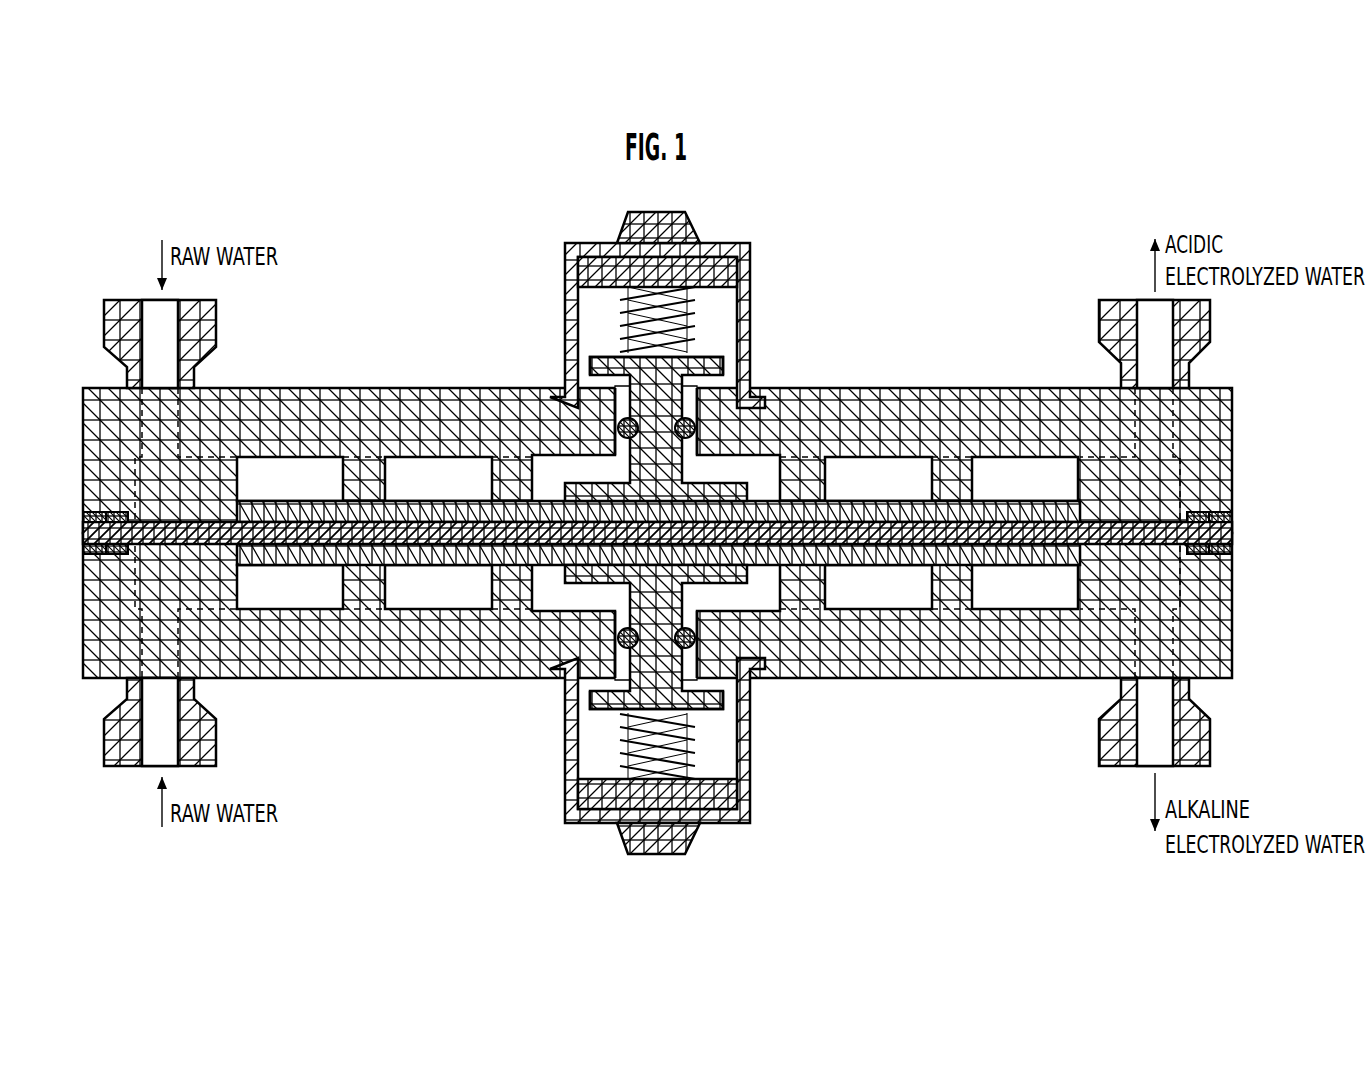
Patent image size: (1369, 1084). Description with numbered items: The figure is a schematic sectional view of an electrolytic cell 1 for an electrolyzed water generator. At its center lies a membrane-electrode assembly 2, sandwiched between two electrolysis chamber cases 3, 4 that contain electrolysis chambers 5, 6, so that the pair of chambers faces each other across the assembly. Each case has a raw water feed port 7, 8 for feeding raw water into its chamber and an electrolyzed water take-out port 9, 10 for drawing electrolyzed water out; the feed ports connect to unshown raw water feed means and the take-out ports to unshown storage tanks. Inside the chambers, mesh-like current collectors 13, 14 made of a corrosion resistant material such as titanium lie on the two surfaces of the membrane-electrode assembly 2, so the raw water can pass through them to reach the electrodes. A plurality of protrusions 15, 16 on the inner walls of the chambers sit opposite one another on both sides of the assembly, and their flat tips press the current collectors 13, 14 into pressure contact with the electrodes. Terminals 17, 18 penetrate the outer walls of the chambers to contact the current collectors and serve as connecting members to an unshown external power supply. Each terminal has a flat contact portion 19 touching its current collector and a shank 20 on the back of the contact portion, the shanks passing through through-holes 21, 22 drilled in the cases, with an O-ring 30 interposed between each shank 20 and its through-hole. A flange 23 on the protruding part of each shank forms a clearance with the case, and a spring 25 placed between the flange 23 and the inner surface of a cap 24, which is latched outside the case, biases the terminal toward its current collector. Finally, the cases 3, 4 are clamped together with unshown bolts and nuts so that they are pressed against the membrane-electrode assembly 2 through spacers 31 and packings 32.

The electrolytic cell 1 is at (1050, 230).
The membrane-electrode assembly 2 is at (1232, 532).
The electrolysis chamber case 3 is at (1232, 440).
The electrolysis chamber case 4 is at (1232, 612).
The electrolysis chamber 5 is at (1027, 468).
The electrolysis chamber 6 is at (1030, 598).
The raw water feed port 7 is at (155, 305).
The raw water feed port 8 is at (160, 758).
The electrolyzed water take-out port 9 is at (1148, 303).
The electrolyzed water take-out port 10 is at (1153, 762).
The current collector 13 is at (860, 498).
The current collector 14 is at (860, 567).
The protrusions 15 is at (385, 478).
The protrusions 16 is at (385, 593).
The terminal 17 is at (715, 316).
The terminal 18 is at (717, 739).
The contact portion 19 is at (757, 592).
The shank 20 is at (630, 593).
The through-hole 21 is at (620, 391).
The through-hole 22 is at (625, 677).
The flange 23 is at (600, 709).
The cap 24 is at (717, 825).
The spring 25 is at (688, 721).
The O-ring 30 is at (697, 638).
The spacer 31 is at (86, 550).
The packing 32 is at (112, 556).